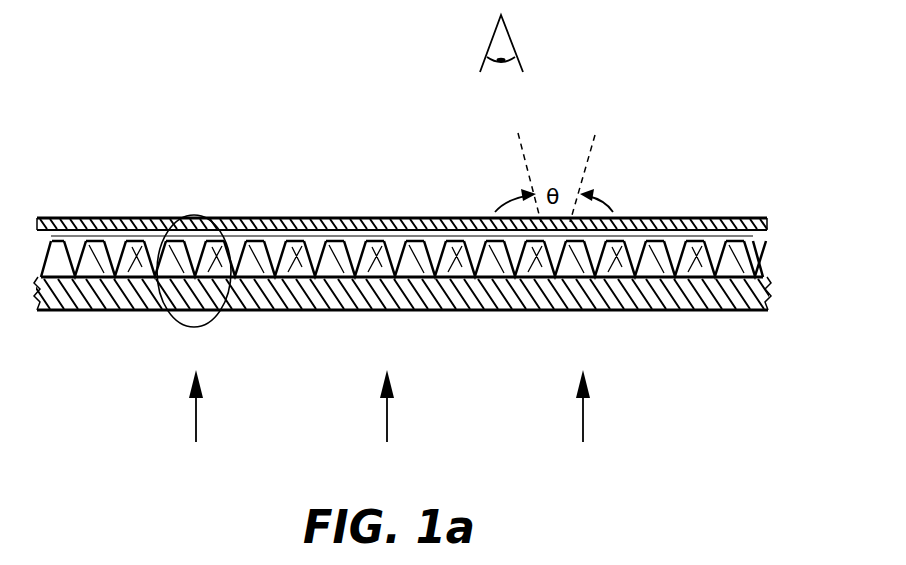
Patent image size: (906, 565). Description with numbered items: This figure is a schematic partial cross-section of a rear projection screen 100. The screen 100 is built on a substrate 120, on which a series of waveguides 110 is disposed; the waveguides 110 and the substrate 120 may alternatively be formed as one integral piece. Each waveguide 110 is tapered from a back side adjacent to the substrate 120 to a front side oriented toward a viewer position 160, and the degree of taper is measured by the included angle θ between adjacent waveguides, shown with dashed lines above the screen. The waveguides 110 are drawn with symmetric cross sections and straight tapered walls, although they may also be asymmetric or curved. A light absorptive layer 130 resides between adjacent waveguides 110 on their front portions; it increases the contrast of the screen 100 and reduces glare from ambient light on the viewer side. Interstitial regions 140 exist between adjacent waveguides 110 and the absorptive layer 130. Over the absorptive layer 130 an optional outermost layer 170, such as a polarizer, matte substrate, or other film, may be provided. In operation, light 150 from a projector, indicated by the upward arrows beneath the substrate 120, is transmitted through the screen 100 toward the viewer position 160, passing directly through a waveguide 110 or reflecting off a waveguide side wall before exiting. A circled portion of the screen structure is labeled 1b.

The projection screen 100 is at (693, 125).
The waveguides 110 is at (132, 232).
The substrate 120 is at (748, 312).
The light absorptive layer 130 is at (353, 237).
The interstitial regions 140 is at (198, 240).
The light 150 is at (585, 422).
The viewer position 160 is at (513, 50).
The optional outermost layer 170 is at (723, 217).
The detail region of FIG. 1b is at (172, 322).